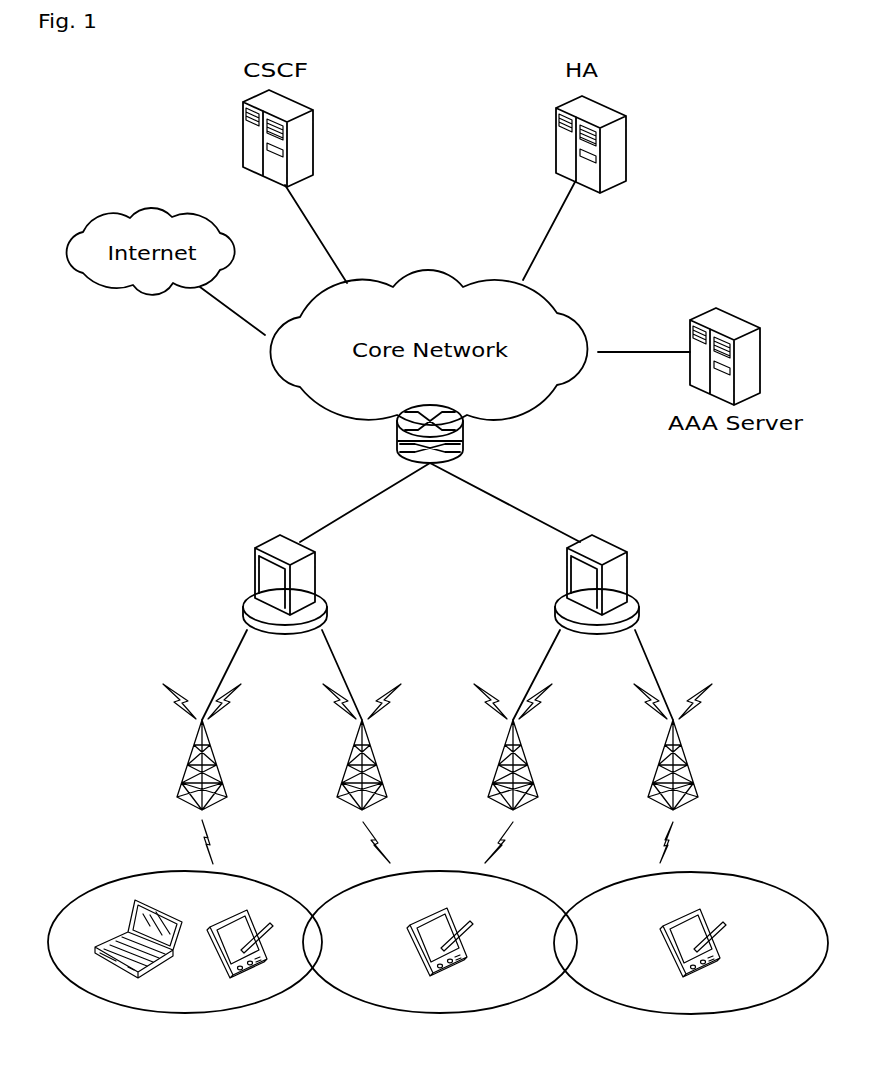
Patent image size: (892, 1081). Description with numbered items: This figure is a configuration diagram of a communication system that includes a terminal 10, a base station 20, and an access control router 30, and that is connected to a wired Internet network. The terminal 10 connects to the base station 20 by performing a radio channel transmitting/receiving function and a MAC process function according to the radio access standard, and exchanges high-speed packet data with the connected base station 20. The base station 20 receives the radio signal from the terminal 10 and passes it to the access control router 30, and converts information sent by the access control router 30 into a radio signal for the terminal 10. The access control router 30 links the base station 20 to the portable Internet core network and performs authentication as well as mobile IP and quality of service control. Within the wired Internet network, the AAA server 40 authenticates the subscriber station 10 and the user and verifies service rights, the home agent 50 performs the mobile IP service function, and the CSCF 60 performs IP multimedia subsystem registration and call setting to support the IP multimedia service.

The terminal 10 is at (137, 975).
The base station 20 is at (224, 784).
The access control router 30 is at (315, 576).
The authentication, authorization, accounting (AAA) server 40 is at (762, 350).
The home agent (HA) 50 is at (627, 136).
The call state control function (CSCF) 60 is at (315, 136).